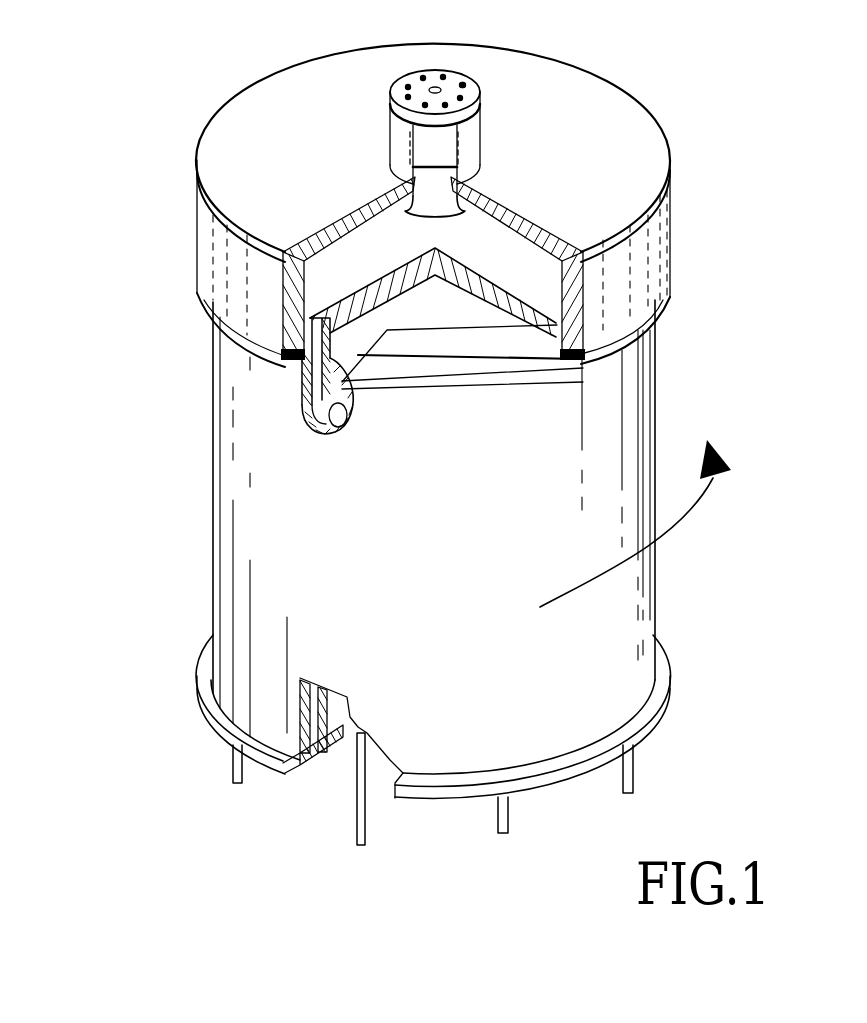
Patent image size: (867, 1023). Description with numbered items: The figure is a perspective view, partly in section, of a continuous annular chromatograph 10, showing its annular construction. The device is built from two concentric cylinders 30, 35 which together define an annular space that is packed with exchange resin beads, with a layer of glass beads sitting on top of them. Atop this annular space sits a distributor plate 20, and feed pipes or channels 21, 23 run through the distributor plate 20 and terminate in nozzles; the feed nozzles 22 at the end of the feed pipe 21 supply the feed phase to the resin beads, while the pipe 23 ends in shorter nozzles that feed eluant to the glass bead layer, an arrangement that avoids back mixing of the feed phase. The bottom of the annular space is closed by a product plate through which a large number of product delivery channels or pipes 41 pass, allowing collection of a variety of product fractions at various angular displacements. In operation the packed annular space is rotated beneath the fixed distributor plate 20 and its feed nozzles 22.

The continuous annular chromatograph 10 is at (134, 452).
The distributor plate 20 is at (482, 85).
The feed pipe 21 is at (444, 73).
The feed nozzle 22 is at (466, 82).
The feed pipe 23 is at (433, 88).
The concentric cylinder 30 is at (657, 374).
The concentric cylinder 35 is at (337, 432).
The product delivery pipe 41 is at (635, 768).